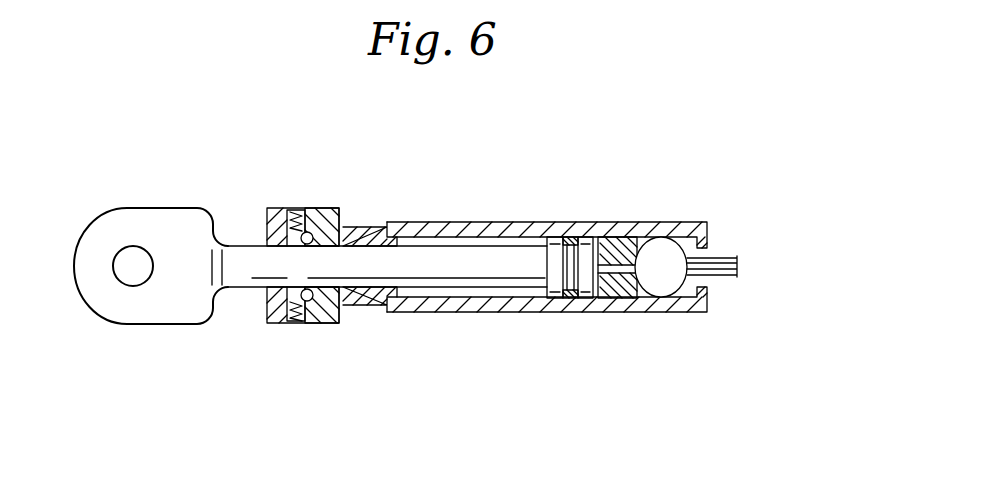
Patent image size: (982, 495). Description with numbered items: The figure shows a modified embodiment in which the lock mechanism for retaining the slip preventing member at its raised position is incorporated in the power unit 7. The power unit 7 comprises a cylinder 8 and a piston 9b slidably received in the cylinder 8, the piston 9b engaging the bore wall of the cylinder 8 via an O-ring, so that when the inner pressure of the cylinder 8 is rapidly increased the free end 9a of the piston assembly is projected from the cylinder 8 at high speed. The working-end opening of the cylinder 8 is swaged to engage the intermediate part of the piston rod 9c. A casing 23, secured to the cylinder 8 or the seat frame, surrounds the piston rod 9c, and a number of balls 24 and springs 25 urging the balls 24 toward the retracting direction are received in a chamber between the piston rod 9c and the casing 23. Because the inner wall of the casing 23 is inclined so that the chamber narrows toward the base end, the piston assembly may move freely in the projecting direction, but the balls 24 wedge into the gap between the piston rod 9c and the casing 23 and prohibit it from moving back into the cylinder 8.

The power unit 7 is at (507, 188).
The cylinder 8 is at (637, 224).
The free end of the piston assembly 9a is at (174, 218).
The piston 9b is at (585, 238).
The piston rod 9c is at (373, 250).
The casing 23 is at (317, 208).
The balls 24 is at (316, 320).
The springs 25 is at (290, 312).